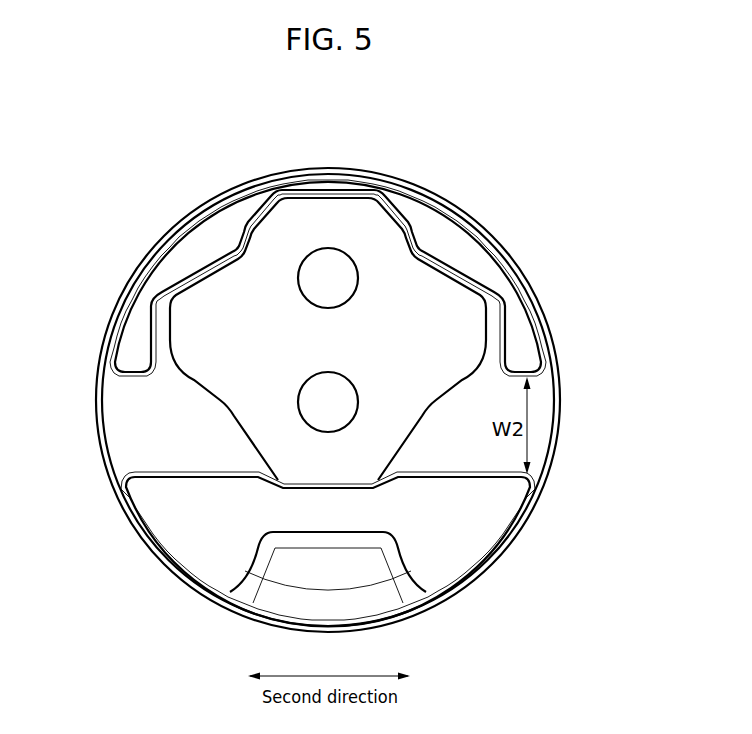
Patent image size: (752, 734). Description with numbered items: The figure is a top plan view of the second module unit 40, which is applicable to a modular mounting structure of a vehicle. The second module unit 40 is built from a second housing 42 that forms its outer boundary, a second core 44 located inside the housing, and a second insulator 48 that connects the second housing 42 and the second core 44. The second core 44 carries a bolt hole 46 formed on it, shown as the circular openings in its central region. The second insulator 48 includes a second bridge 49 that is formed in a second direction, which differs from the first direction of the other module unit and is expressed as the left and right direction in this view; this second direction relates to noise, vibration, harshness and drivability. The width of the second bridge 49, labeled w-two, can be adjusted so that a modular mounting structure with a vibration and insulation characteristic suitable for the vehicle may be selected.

The second module unit 40 is at (556, 517).
The second housing 42 is at (562, 406).
The second core 44 is at (465, 322).
The bolt hole 46 is at (342, 406).
The second insulator 48 is at (200, 533).
The second bridge 49 is at (135, 438).